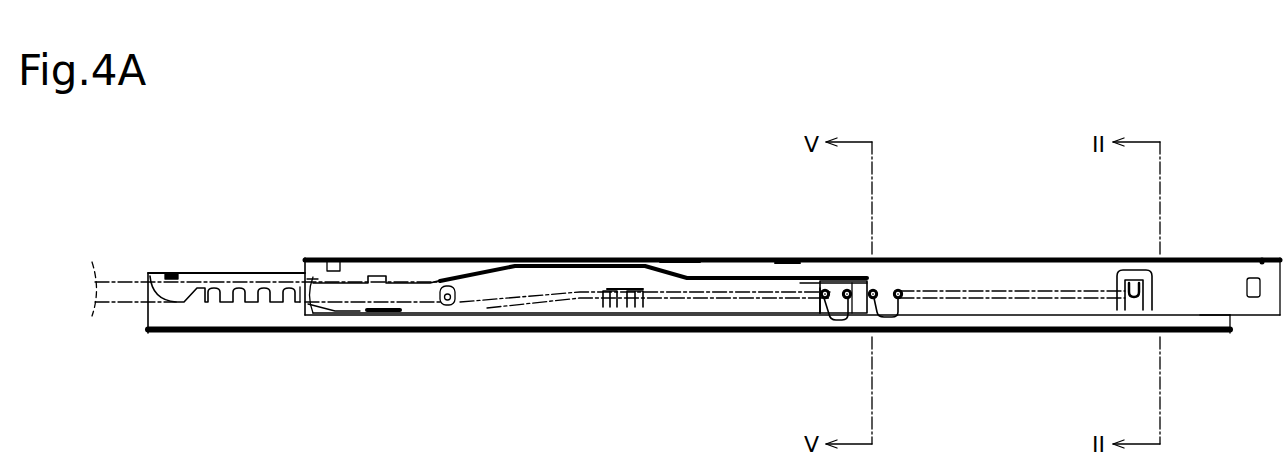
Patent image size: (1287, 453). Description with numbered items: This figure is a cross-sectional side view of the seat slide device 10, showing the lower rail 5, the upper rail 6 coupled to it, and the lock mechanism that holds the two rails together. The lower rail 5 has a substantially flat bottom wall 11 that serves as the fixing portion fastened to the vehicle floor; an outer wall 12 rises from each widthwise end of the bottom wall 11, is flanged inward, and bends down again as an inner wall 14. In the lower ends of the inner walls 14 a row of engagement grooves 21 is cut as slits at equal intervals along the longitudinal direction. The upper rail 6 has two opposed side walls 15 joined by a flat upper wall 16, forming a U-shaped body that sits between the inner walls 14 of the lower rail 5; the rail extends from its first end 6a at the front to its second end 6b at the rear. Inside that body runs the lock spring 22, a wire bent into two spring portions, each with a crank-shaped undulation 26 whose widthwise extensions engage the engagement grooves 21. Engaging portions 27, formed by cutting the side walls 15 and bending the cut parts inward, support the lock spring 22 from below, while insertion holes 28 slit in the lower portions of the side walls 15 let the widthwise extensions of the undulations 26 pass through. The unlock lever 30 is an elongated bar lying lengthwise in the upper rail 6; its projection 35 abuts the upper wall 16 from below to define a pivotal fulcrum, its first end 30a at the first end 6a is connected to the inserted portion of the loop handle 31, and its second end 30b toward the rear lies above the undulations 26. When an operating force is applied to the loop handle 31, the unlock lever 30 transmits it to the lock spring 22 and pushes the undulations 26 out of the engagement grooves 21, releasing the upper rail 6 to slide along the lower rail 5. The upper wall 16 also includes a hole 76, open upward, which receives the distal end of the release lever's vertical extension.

The slide rail assembly 10 is at (117, 172).
The loop handle 31 is at (120, 282).
The lower rail 5 is at (222, 273).
The upper rail 6 is at (958, 258).
The first end 6a is at (310, 258).
The second end 6b is at (1280, 258).
The hole 76 is at (785, 262).
The upper wall 16 is at (682, 258).
The bottom wall 11 is at (637, 334).
The side wall 15 is at (1249, 329).
The outer wall 12 is at (148, 318).
The inner wall 14 is at (166, 300).
The engagement groove 21 is at (245, 302).
The first end 30a is at (310, 300).
The unlock lever 30 is at (718, 280).
The projection 35 is at (535, 265).
The engaging portion 27 is at (620, 291).
The lock spring 22 is at (1012, 290).
The second end 30b is at (838, 278).
The undulation 26 is at (898, 290).
The insertion hole 28 is at (832, 318).